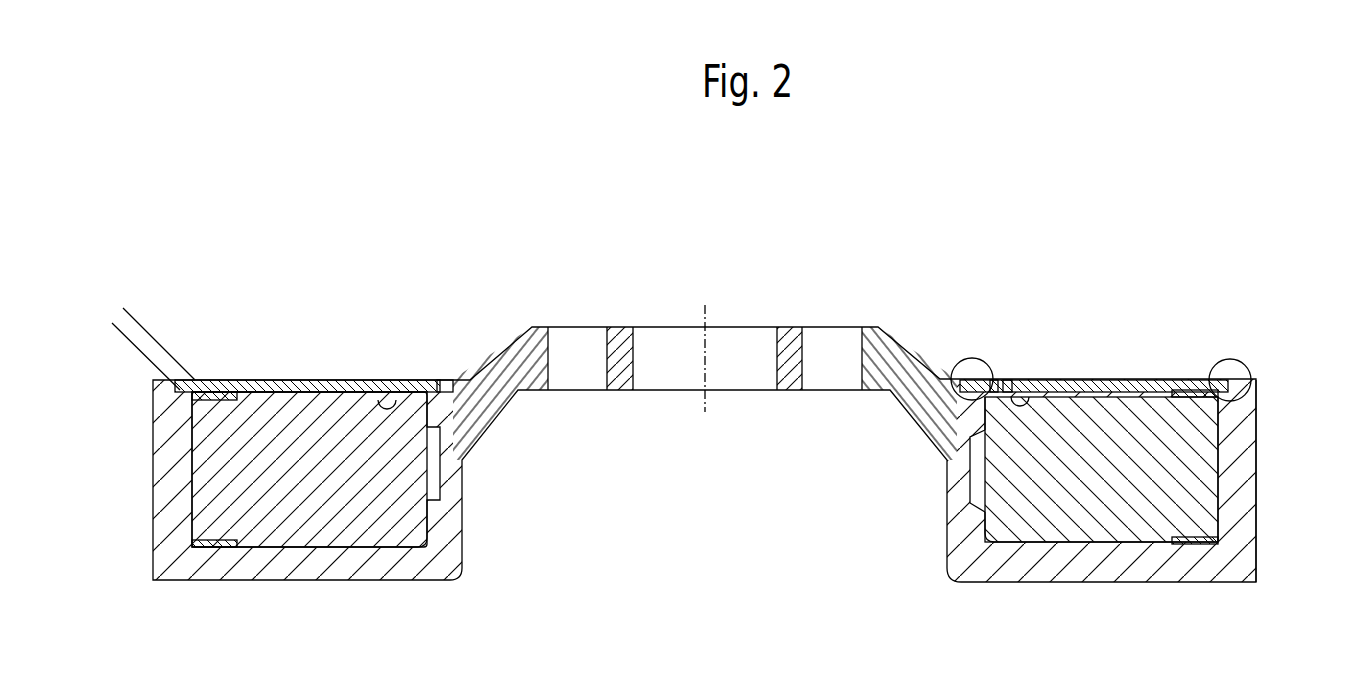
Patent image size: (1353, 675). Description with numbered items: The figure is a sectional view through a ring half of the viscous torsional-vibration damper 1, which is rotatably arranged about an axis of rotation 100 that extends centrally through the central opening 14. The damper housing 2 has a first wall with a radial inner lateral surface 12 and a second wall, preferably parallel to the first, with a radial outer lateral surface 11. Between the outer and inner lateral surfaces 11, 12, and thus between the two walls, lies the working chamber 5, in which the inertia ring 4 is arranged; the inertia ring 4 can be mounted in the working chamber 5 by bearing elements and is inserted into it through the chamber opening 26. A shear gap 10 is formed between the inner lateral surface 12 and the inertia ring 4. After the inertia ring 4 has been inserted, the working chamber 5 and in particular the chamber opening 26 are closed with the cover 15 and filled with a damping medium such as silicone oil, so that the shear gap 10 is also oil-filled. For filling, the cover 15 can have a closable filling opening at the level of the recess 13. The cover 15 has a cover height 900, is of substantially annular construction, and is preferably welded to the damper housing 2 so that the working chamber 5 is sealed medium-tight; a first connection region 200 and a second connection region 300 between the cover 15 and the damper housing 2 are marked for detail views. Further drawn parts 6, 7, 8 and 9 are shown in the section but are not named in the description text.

The viscous torsional-vibration damper 1 is at (962, 598).
The damper housing 2 is at (965, 545).
The inertia ring 4 is at (1200, 500).
The working chamber 5 is at (1136, 426).
The sealing element 6 is at (996, 383).
The contact bump 7 is at (1010, 382).
The housing bottom wall 8 is at (978, 527).
The upper contact layer 9 is at (1200, 388).
The shear gap 10 is at (977, 458).
The radial outer lateral surface 11 is at (1230, 425).
The radial inner lateral surface 12 is at (963, 482).
The recess 13 is at (1035, 382).
The central opening 14 is at (658, 392).
The cover 15 is at (1107, 378).
The chamber opening 26 is at (312, 383).
The axis of rotation 100 is at (708, 322).
The first connection region 200 is at (973, 360).
The second connection region 300 is at (1232, 360).
The cover height 900 is at (153, 288).